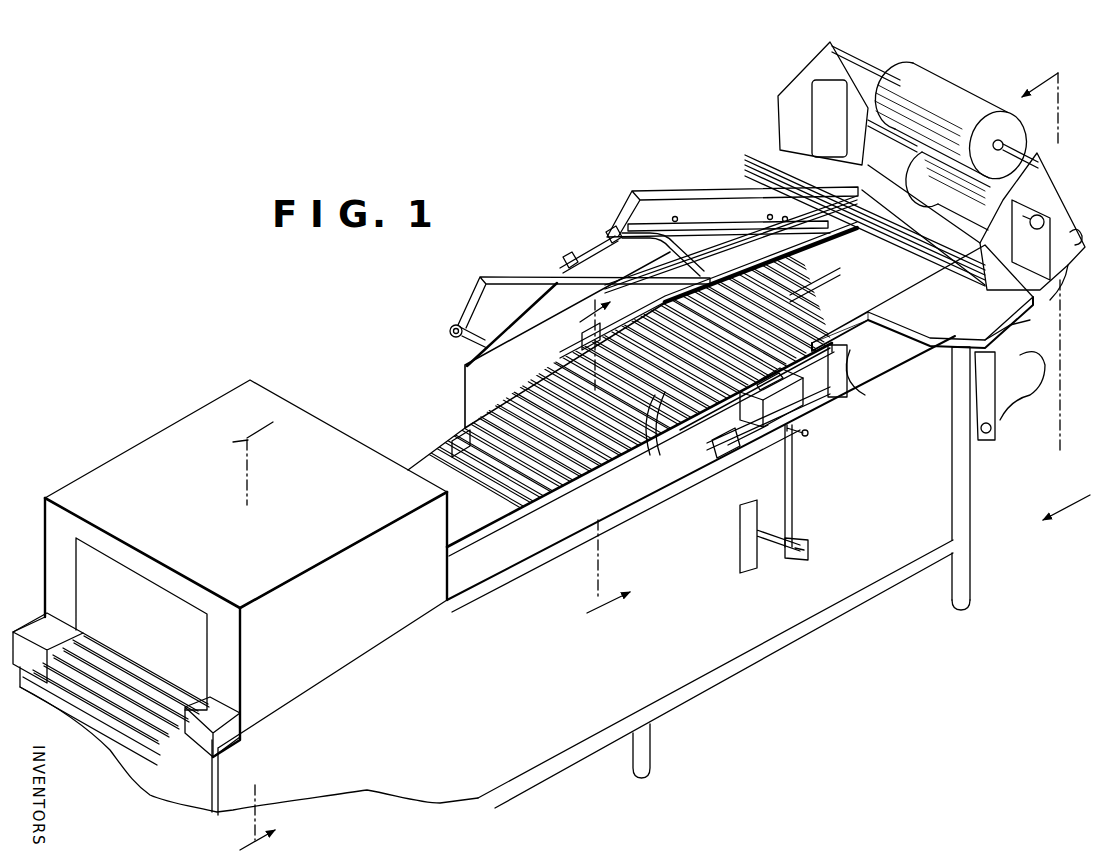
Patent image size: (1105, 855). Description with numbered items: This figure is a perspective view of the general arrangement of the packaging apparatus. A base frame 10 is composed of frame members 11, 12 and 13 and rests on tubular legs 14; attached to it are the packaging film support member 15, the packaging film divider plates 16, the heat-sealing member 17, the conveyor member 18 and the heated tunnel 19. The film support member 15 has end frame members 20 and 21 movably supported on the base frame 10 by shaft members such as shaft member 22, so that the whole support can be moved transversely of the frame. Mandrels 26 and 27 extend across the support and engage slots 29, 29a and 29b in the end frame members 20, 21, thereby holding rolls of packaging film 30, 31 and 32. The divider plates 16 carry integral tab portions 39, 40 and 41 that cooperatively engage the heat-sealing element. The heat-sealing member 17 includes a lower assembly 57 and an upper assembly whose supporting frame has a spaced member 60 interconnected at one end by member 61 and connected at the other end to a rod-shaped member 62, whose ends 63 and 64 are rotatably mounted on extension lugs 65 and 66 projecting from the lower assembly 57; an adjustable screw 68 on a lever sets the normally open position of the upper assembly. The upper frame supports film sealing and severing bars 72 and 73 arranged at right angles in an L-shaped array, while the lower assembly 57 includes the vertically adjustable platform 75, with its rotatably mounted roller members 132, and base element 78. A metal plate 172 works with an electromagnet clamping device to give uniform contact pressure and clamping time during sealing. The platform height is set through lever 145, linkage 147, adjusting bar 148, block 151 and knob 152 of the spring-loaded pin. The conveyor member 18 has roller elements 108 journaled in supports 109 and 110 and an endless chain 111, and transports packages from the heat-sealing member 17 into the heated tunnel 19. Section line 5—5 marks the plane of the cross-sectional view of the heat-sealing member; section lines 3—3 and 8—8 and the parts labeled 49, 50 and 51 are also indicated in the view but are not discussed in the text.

The section line 3- 3 is at (1056, 292).
The section line 5— 5 is at (596, 463).
The section line 8- 8 is at (263, 631).
The base frame 10 is at (970, 497).
The frame member 11 is at (467, 600).
The frame member 12 is at (562, 750).
The frame member 13 is at (222, 786).
The tubular legs 14 is at (650, 738).
The packaging film support member 15 is at (1063, 180).
The packaging film divider plates 16 is at (940, 352).
The heat-sealing member 17 is at (807, 345).
The conveyor member 18 is at (508, 438).
The heated tunnel 19 is at (300, 530).
The end frame member 20 is at (1062, 270).
The end frame member 21 is at (790, 92).
The shaft member 22 is at (993, 440).
The mandrel 26 is at (870, 68).
The mandrel 27 is at (895, 145).
The slot 29 is at (1040, 160).
The slot 29a is at (1076, 230).
The slot 29b is at (1040, 390).
The roll of packaging film 30 is at (975, 97).
The roll of packaging film 31 is at (925, 187).
The roll of packaging film 32 is at (1022, 340).
The integral tab portion 39 is at (866, 394).
The integral tab portion 40 is at (852, 352).
The integral tab portion 41 is at (862, 326).
The guide rod 49 is at (800, 170).
The guide rod 50 is at (815, 178).
The guide rod 51 is at (790, 175).
The lower assembly 57 is at (498, 278).
The spaced frame member 60 is at (690, 196).
The interconnecting member 61 is at (750, 256).
The rod-shaped member 62 is at (580, 262).
The end of rod-shaped member 63 is at (449, 331).
The end of rod-shaped member 64 is at (610, 236).
The extension lug 65 is at (470, 346).
The extension lug 66 is at (636, 246).
The adjustable screw 68 is at (575, 292).
The film sealing and severing bar 72 is at (728, 232).
The film sealing and severing bar 73 is at (728, 283).
The vertically adjustable platform 75 is at (582, 343).
The base element 78 is at (730, 402).
The roller elements 108 is at (468, 440).
The roller support 109 is at (410, 462).
The roller support 110 is at (520, 520).
The endless belt or chain 111 is at (790, 385).
The roller members 132 is at (650, 455).
The lever 145 is at (798, 552).
The linkage 147 is at (805, 540).
The adjusting bar 148 is at (792, 478).
The block 151 is at (775, 445).
The knob 152 is at (810, 432).
The metal plate 172 is at (848, 248).